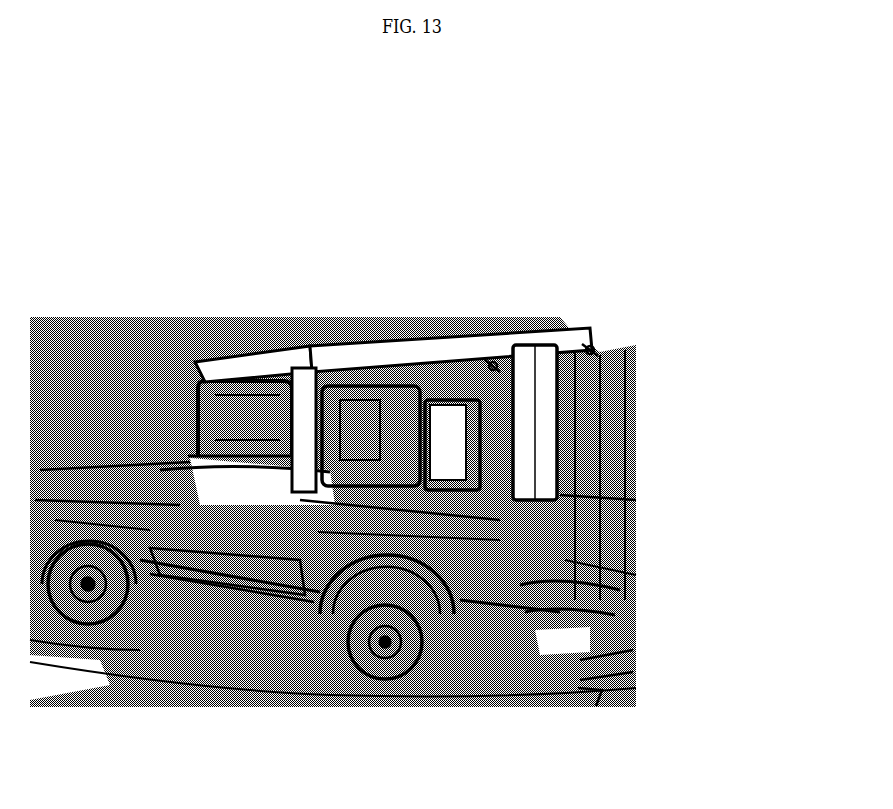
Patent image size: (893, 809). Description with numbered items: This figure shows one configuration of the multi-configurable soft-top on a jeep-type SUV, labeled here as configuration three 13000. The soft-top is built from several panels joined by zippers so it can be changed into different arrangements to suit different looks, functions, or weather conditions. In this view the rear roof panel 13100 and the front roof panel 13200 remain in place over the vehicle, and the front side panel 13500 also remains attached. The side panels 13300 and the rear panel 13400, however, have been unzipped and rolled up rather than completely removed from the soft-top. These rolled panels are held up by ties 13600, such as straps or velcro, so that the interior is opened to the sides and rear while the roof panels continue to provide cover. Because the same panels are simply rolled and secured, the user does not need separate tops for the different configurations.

The Configuration 3 13000 is at (333, 403).
The Rear Roof Panel 13100 is at (385, 320).
The Front Roof Panel 13200 is at (215, 340).
The Side Panels (rolled up) 13300 is at (505, 600).
The rear panel 13400 is at (688, 317).
The Front Side Panel 13500 is at (227, 598).
The ties 13600 is at (590, 347).